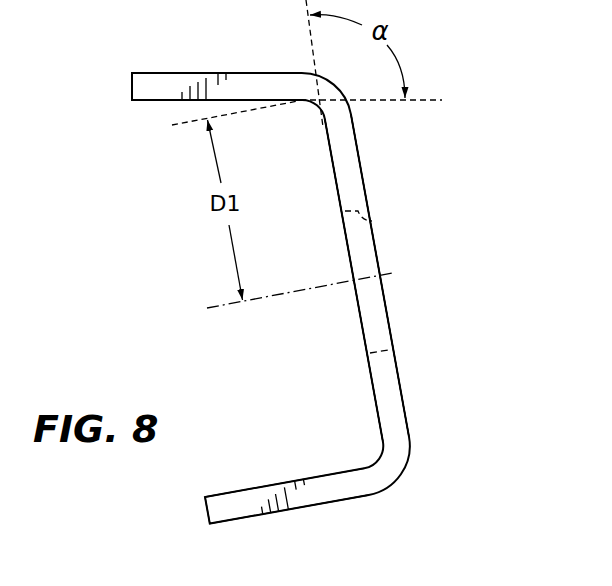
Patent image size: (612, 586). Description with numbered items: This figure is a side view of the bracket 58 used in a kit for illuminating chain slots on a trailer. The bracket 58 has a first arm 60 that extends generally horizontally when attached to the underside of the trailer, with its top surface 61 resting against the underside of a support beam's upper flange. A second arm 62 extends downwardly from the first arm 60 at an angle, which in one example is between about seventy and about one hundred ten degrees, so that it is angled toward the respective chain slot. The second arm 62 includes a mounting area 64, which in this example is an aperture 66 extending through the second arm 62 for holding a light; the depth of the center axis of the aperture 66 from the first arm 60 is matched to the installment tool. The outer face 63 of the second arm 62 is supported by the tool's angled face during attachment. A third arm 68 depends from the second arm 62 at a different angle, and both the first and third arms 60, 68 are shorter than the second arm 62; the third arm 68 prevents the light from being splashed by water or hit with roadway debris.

The bracket 58 is at (146, 292).
The first arm 60 is at (170, 73).
The top surface of the first arm 61 is at (238, 71).
The second arm 62 is at (400, 370).
The outer face of the second arm 63 is at (405, 400).
The mounting area 64 is at (400, 307).
The aperture 66 is at (372, 221).
The third arm 68 is at (262, 487).